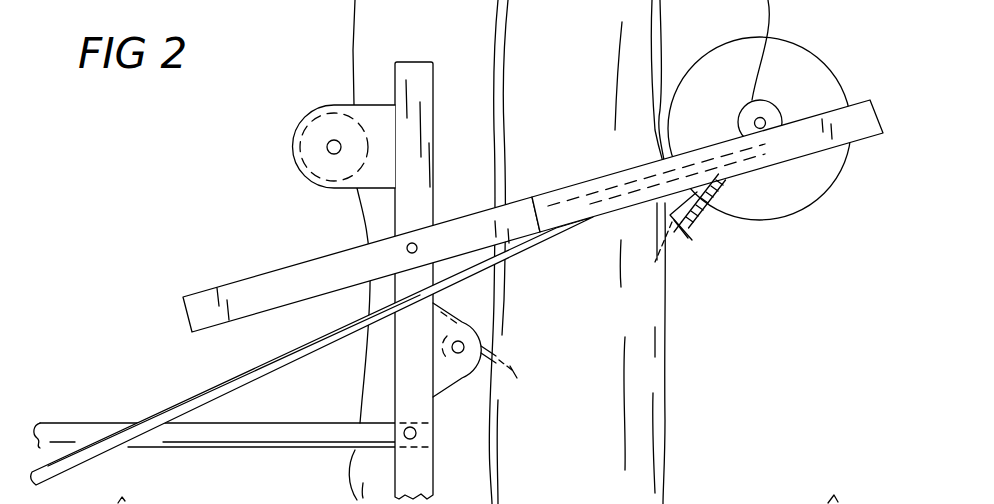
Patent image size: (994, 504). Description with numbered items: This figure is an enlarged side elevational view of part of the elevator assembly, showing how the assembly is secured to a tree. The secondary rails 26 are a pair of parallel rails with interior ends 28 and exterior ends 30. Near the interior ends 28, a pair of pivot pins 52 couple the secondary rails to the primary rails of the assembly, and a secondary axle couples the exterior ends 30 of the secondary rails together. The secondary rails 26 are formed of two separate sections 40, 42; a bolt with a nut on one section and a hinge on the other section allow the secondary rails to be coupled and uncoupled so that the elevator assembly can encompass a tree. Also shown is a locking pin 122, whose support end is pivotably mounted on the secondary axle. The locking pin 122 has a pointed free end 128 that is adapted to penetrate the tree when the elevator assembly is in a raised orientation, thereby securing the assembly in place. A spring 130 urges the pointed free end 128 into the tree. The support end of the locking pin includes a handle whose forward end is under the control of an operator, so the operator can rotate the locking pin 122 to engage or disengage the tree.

The secondary rails 26 is at (565, 190).
The interior ends 28 is at (198, 293).
The exterior ends 30 is at (870, 100).
The section 40 is at (318, 277).
The section 42 is at (802, 147).
The pivot pins 52 is at (416, 246).
The locking pin 122 is at (694, 210).
The pointed free end 128 is at (658, 262).
The spring 130 is at (713, 212).